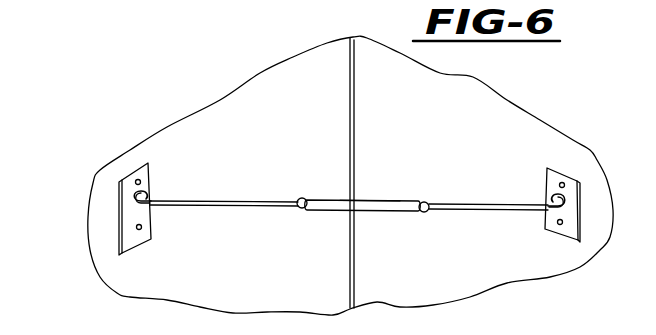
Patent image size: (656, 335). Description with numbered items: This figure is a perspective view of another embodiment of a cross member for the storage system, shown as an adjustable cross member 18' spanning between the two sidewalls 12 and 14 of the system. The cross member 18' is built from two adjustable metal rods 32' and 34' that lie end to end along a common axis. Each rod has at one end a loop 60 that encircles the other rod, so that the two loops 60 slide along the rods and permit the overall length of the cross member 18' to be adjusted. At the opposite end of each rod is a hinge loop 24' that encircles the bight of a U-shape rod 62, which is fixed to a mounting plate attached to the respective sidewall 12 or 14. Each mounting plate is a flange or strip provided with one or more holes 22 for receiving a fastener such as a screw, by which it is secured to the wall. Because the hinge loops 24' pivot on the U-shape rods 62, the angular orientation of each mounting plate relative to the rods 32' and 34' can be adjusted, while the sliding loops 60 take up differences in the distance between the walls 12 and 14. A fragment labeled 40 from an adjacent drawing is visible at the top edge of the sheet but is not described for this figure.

The wall 12 is at (320, 109).
The wall 14 is at (407, 101).
The adjustable cross member 18' is at (349, 239).
The holes 22 is at (141, 182).
The hinge loop 24' is at (350, 164).
The adjustable metal rod 32' is at (363, 251).
The adjustable metal rod 34' is at (388, 174).
The reference from adjacent figure 40 is at (87, 0).
The loop 60 is at (301, 199).
The U-shape rod 62 is at (123, 193).